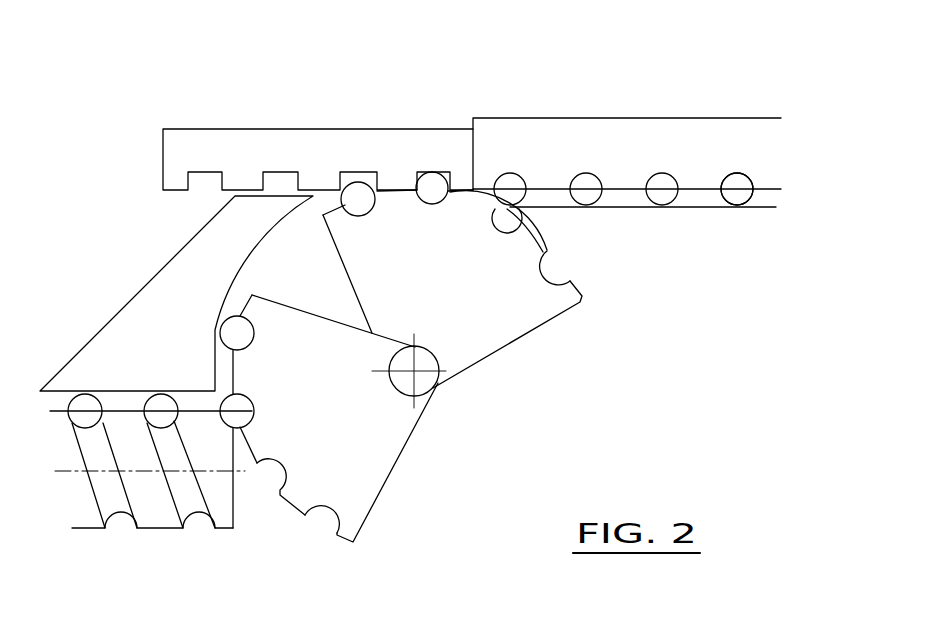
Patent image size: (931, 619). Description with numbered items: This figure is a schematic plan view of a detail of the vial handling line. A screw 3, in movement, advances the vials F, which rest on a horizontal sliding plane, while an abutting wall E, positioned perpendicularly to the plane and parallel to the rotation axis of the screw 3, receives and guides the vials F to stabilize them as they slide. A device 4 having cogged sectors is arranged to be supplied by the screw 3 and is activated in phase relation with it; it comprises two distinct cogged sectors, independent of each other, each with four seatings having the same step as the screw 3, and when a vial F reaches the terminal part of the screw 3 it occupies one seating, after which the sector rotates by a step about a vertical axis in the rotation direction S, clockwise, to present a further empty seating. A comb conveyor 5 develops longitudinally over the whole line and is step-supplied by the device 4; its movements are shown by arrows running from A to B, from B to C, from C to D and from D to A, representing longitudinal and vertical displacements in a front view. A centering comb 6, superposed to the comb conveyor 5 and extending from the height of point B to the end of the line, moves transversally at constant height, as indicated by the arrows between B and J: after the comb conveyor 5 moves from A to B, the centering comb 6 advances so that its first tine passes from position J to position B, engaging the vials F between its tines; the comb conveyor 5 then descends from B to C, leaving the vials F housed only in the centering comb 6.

The screw 3 is at (155, 518).
The device having sectors 4 is at (482, 431).
The comb conveyor 5 is at (245, 147).
The centering comb 6 is at (707, 136).
The abutting wall E is at (118, 400).
The vials F is at (738, 198).
The rotation direction S is at (293, 244).
The position J is at (331, 143).
The point A is at (418, 93).
The point B is at (418, 43).
The point C is at (620, 43).
The point D is at (620, 93).